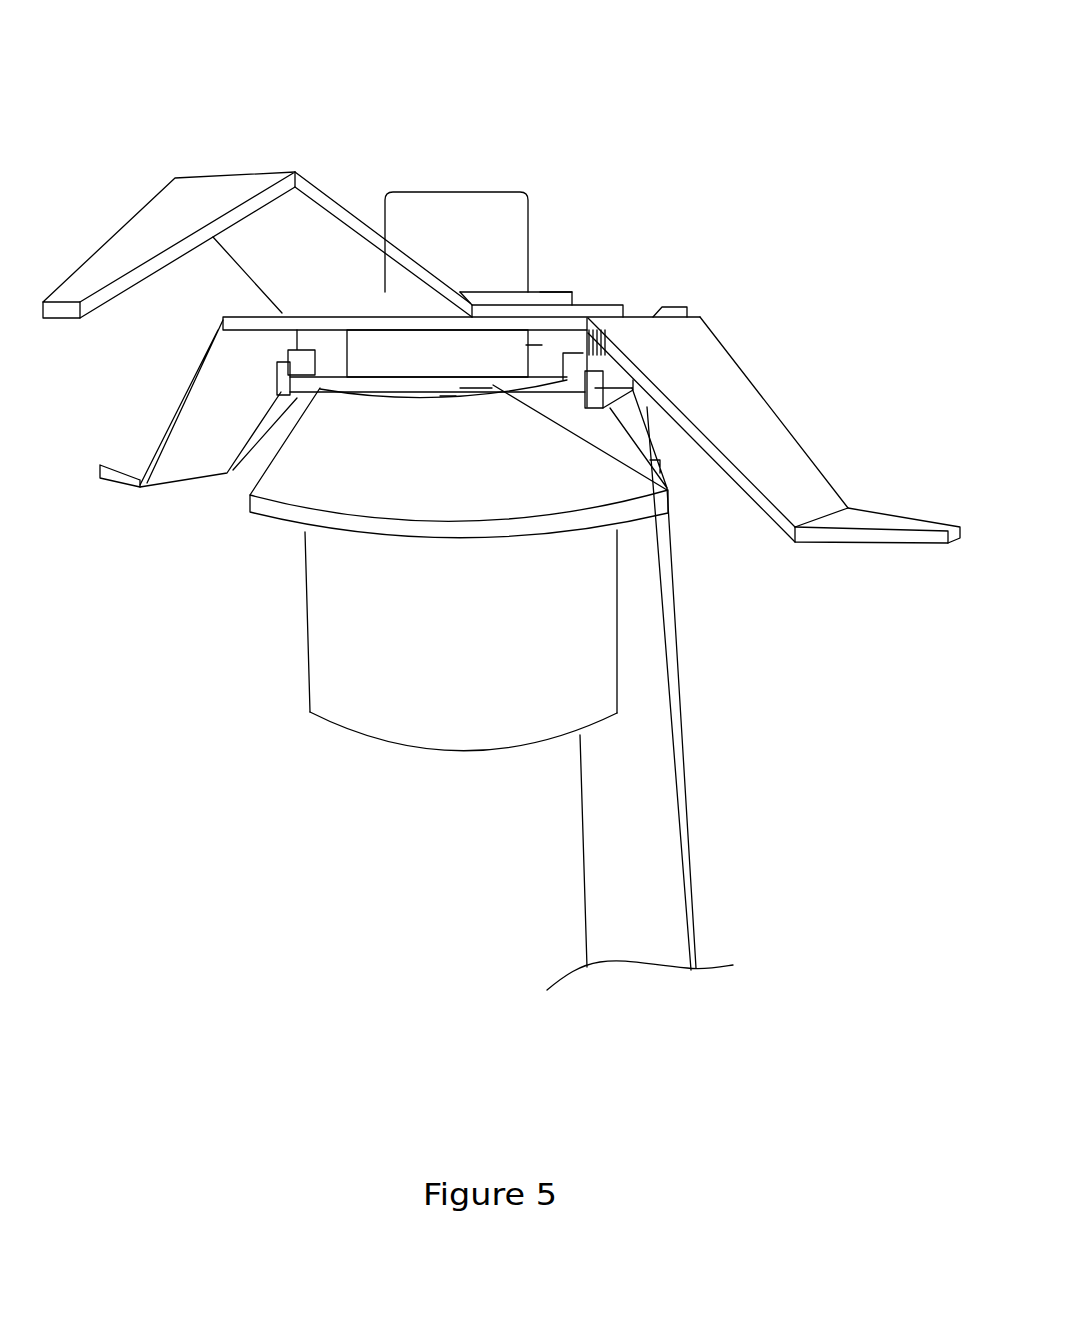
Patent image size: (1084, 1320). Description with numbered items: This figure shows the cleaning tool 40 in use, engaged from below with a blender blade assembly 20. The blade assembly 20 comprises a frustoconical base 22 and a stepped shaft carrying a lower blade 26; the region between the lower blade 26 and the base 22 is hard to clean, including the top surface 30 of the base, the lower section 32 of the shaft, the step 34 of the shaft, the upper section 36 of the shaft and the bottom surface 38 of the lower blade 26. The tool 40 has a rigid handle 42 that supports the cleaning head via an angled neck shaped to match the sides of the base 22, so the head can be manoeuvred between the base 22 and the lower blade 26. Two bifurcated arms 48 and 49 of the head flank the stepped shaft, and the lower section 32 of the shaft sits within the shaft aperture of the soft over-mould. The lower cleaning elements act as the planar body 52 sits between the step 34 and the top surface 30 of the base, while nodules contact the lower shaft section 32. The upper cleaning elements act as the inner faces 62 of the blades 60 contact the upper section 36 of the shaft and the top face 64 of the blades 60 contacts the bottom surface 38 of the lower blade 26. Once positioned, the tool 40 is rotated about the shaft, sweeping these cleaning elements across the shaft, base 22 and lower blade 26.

The blender blade assembly 20 is at (181, 176).
The frustoconical base 22 is at (280, 478).
The lower blade 26 is at (802, 475).
The top surface of the base 30 is at (463, 392).
The lower section of the shaft 32 is at (430, 387).
The step of the shaft 34 is at (455, 383).
The upper section of the shaft 36 is at (377, 363).
The bottom surface of the lower blade 38 is at (541, 336).
The cleaning tool 40 is at (690, 853).
The handle 42 is at (638, 722).
The bifurcated arm 48 is at (590, 363).
The bifurcated arm 49 is at (278, 380).
The planar body 52 is at (515, 393).
The blades 60 is at (545, 363).
The inner faces of the blades 62 is at (549, 336).
The top face of the blades 64 is at (560, 335).